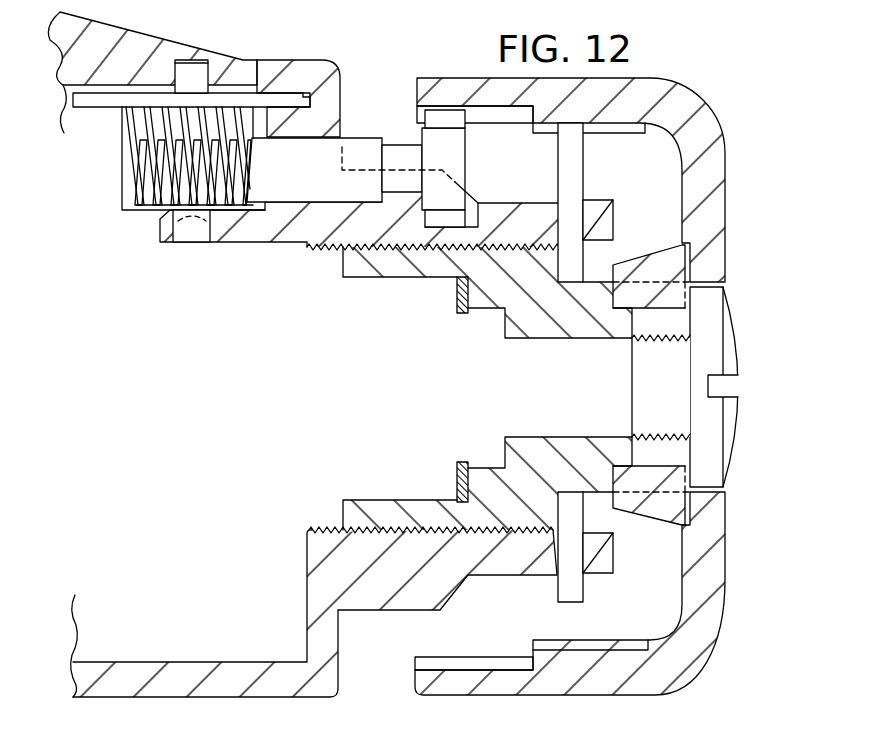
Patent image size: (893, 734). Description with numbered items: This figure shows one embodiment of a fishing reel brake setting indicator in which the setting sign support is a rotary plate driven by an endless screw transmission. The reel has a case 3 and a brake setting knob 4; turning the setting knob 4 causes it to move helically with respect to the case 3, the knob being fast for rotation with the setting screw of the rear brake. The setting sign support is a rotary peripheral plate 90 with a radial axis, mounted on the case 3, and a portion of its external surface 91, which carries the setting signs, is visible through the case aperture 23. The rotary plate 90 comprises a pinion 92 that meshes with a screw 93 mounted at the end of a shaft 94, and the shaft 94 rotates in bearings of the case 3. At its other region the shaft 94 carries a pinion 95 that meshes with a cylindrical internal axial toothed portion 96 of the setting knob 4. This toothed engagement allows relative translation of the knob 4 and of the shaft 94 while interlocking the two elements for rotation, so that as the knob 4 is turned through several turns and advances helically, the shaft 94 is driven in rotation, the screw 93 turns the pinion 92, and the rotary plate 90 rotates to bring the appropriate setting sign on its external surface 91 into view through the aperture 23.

The case 3 is at (63, 87).
The brake setting knob 4 is at (695, 650).
The case aperture 23 is at (287, 75).
The rotary peripheral plate 90 is at (103, 107).
The external surface 91 is at (272, 139).
The pinion 92 is at (120, 143).
The screw 93 is at (152, 211).
The shaft 94 is at (347, 193).
The pinion 95 is at (447, 203).
The cylindrical internal axial toothed portion 96 is at (507, 110).